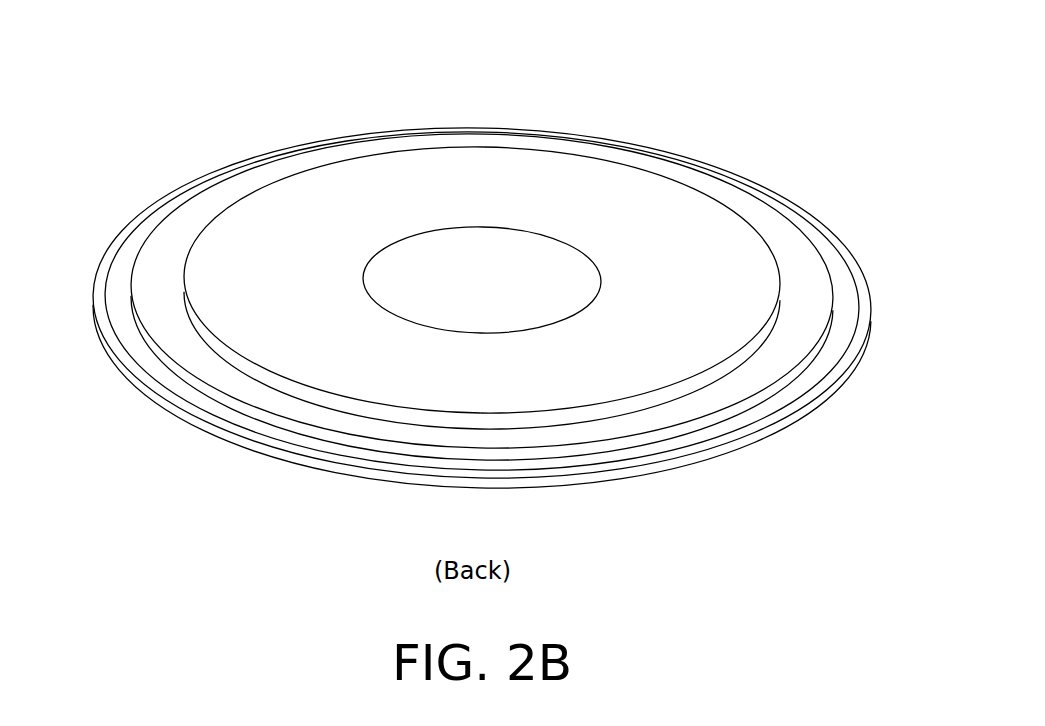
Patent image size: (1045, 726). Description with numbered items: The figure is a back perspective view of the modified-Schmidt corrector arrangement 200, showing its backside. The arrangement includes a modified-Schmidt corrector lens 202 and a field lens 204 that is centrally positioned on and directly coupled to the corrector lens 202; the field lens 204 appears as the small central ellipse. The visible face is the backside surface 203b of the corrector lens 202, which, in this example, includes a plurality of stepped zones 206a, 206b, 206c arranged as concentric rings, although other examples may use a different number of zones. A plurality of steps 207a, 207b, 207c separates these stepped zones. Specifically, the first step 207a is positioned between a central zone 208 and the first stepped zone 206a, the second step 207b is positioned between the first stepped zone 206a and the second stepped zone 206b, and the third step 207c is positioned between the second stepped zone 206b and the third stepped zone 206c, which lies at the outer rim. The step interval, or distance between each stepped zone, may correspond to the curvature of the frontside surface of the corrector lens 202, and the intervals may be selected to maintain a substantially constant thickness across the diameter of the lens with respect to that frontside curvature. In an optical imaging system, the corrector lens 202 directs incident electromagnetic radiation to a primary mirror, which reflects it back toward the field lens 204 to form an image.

The modified-Schmidt corrector arrangement 200 is at (740, 105).
The modified-Schmidt corrector lens 202 is at (275, 462).
The backside surface 203b is at (391, 178).
The field lens 204 is at (545, 258).
The first stepped zone 206a is at (222, 185).
The second stepped zone 206b is at (128, 245).
The third stepped zone 206c is at (110, 350).
The first step 207a is at (762, 350).
The second step 207b is at (745, 410).
The third step 207c is at (660, 455).
The central zone 208 is at (740, 250).